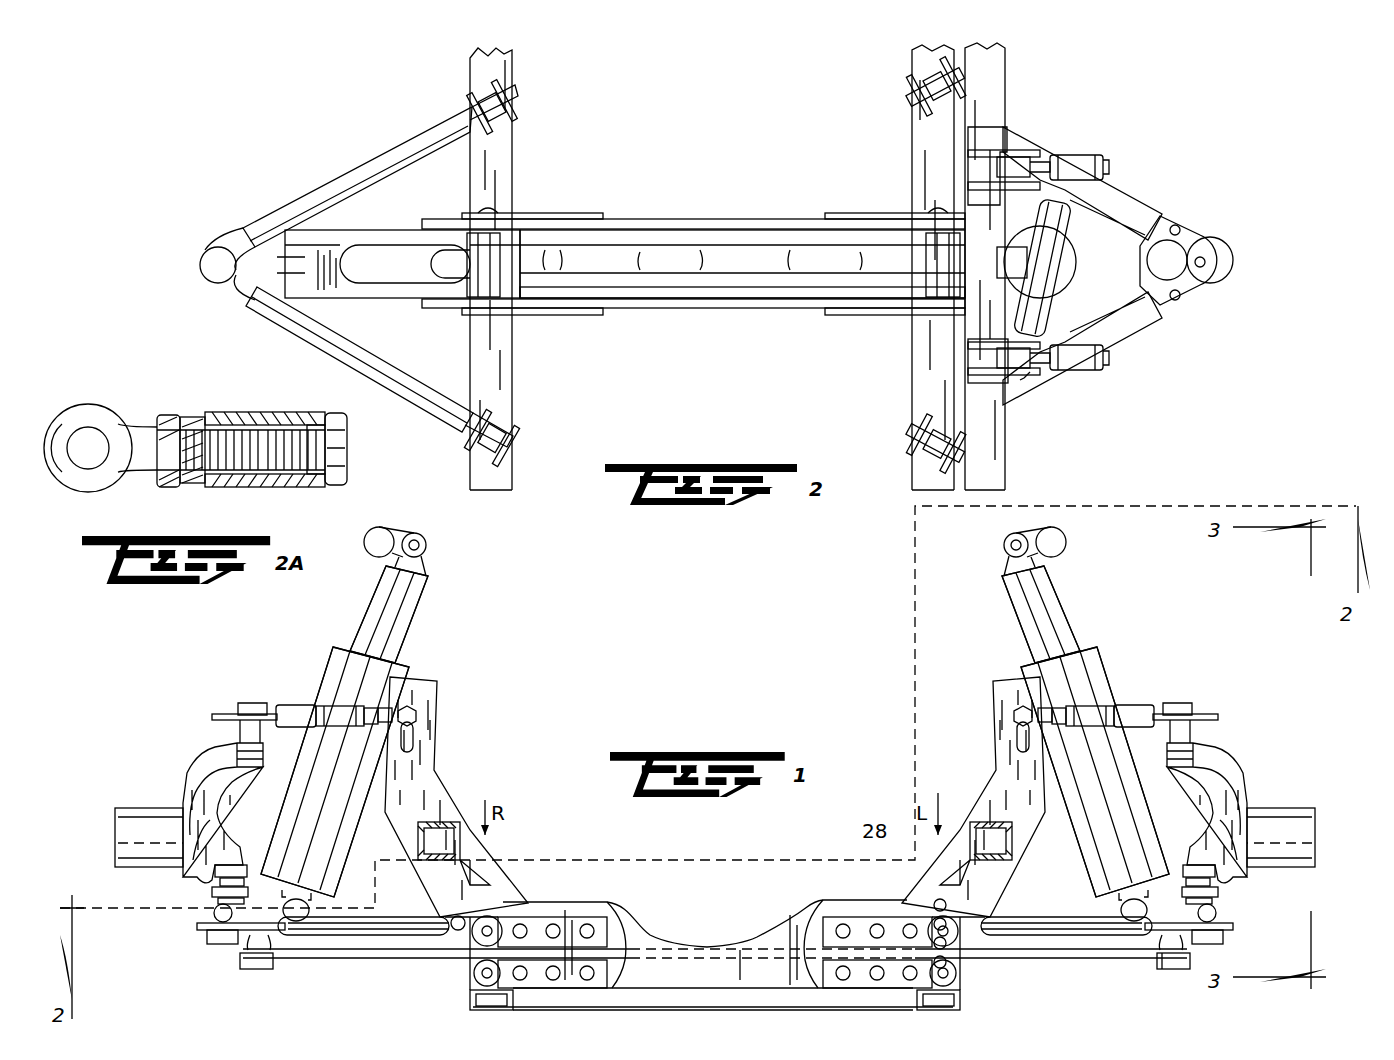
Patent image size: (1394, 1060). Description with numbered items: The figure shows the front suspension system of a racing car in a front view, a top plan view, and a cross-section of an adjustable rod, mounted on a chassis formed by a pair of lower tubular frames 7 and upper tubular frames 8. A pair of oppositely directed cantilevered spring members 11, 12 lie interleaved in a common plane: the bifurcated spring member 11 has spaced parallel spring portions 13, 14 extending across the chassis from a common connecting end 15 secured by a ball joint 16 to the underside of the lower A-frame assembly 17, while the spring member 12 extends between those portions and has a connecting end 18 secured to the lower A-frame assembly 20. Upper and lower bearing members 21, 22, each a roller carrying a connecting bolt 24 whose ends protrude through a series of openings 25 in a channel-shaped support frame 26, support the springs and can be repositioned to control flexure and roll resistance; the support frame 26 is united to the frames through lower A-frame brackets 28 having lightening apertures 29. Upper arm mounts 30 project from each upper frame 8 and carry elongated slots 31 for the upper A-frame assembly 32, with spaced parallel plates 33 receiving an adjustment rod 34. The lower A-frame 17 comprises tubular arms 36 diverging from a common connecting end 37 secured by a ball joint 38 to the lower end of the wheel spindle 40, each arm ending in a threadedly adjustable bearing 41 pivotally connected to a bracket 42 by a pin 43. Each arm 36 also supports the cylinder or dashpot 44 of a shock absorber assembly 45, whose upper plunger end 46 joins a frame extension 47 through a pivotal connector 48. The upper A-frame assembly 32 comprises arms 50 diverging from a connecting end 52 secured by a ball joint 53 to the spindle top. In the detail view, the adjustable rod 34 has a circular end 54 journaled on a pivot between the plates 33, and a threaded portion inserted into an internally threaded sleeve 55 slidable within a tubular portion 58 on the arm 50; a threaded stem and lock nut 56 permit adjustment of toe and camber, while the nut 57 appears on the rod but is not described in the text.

In FIG. 2, the lower tubular frame 7 is at (512, 147).
In FIG. 1, the lower tubular frame 7 is at (470, 1000).
In FIG. 2, the upper tubular frame 8 is at (1005, 80).
In FIG. 1, the upper tubular frame 8 is at (452, 822).
In FIG. 2, the spring member 11 is at (340, 230).
In FIG. 1, the spring member 11 is at (370, 937).
In FIG. 2, the spring member 12 is at (680, 268).
In FIG. 1, the spring member 12 is at (1068, 958).
In FIG. 2, the spring portion 13 is at (640, 219).
In FIG. 2, the spring portion 14 is at (628, 298).
In FIG. 2, the common connecting end 15 is at (335, 297).
In FIG. 1, the ball joint 16 is at (244, 968).
In FIG. 1, the lower A-frame assembly 17 is at (298, 930).
In FIG. 1, the connecting end 18 is at (1170, 970).
In FIG. 1, the lower A-frame assembly 20 is at (1235, 922).
In FIG. 2, the upper bearing member 21 is at (500, 280).
In FIG. 1, the upper bearing member 21 is at (500, 925).
In FIG. 1, the lower bearing member 22 is at (480, 975).
In FIG. 2, the connecting bolt 24 is at (500, 211).
In FIG. 1, the openings 25 is at (590, 917).
In FIG. 2, the support frame 26 is at (745, 308).
In FIG. 1, the support frame 26 is at (757, 937).
In FIG. 1, the lower A-frame bracket 28 is at (472, 870).
In FIG. 1, the apertures 29 is at (960, 905).
In FIG. 2, the upper arm mount 30 is at (990, 145).
In FIG. 1, the upper arm mount 30 is at (437, 765).
In FIG. 1, the slot 31 is at (416, 735).
In FIG. 1, the upper A-frame assembly 32 is at (290, 704).
In FIG. 2, the plates 33 is at (975, 372).
In FIG. 2, the adjustment rod 34 is at (1085, 152).
In FIG. 2A, the adjustment rod 34 is at (180, 405).
In FIG. 1, the adjustment rod 34 is at (331, 703).
In FIG. 2, the arm 36 is at (302, 196).
In FIG. 2, the common connecting end 37 is at (200, 262).
In FIG. 1, the ball joint 38 is at (215, 935).
In FIG. 1, the wheel spindle 40 is at (116, 812).
In FIG. 2, the threadedly adjustable bearing 41 is at (462, 428).
In FIG. 2, the bracket 42 is at (496, 470).
In FIG. 2, the bolt or pin 43 is at (515, 436).
In FIG. 2, the cylinder or dashpot 44 is at (515, 87).
In FIG. 1, the cylinder or dashpot 44 is at (298, 800).
In FIG. 1, the shock absorber assembly 45 is at (334, 628).
In FIG. 1, the upper plunger end 46 is at (406, 600).
In FIG. 2, the extension 47 is at (1050, 300).
In FIG. 1, the pivotal connector 48 is at (395, 529).
In FIG. 2, the arm 50 is at (1130, 200).
In FIG. 2, the common connecting end 52 is at (1195, 238).
In FIG. 1, the ball joint 53 is at (233, 705).
In FIG. 2, the circular end 54 is at (1025, 378).
In FIG. 2A, the circular end 54 is at (92, 405).
In FIG. 2A, the internally threaded sleeve 55 is at (196, 412).
In FIG. 2A, the externally threaded stem / lock nut 56 is at (336, 480).
In FIG. 2A, the lock nut 57 is at (165, 488).
In FIG. 2A, the tubular portion 58 is at (282, 412).